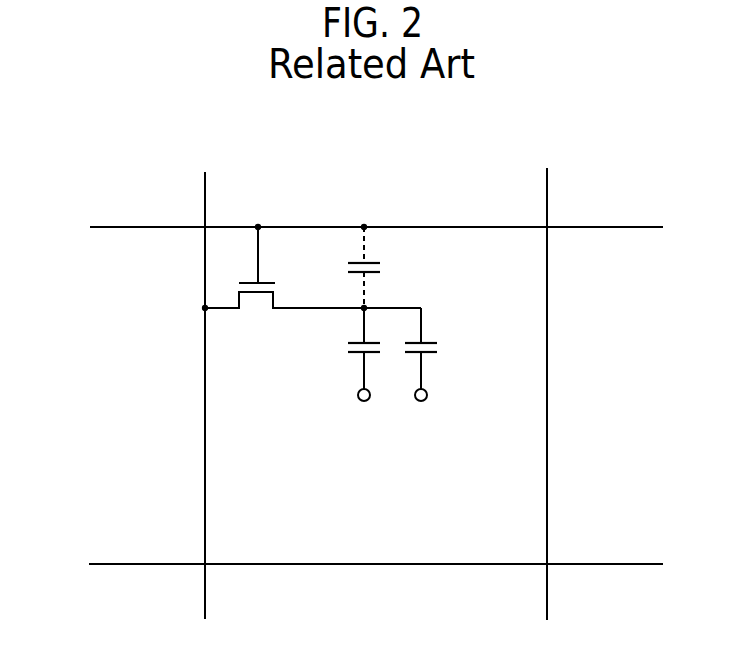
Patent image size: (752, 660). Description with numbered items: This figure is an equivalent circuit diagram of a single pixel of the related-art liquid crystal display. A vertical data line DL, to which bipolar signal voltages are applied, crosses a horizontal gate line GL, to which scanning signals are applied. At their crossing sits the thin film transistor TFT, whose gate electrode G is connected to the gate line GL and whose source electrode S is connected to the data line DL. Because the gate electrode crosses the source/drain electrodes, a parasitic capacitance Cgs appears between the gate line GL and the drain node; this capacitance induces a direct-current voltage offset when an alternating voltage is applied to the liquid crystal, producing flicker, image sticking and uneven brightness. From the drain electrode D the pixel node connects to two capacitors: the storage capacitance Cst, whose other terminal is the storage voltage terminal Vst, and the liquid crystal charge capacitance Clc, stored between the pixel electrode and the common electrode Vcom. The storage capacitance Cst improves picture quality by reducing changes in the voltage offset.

The gate line GL is at (351, 389).
The data line DL is at (367, 378).
The thin film transistor TFT is at (312, 284).
The parasitic capacitance Cgs is at (383, 267).
The storage capacitance Cst is at (346, 354).
The charge capacitance of liquid crystal Clc is at (440, 354).
The storage voltage terminal Vst is at (365, 422).
The common electrode Vcom is at (424, 422).